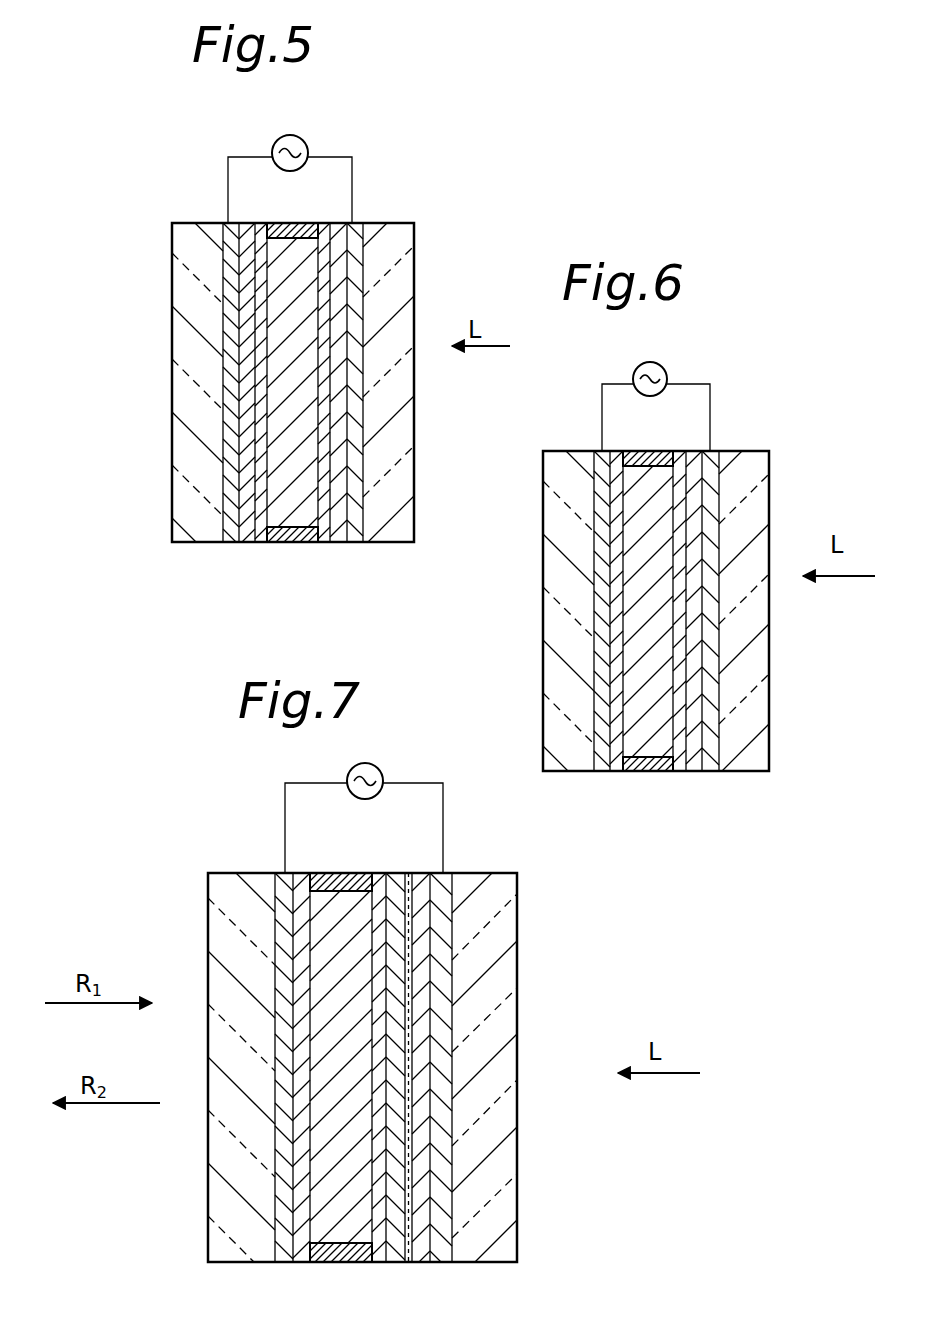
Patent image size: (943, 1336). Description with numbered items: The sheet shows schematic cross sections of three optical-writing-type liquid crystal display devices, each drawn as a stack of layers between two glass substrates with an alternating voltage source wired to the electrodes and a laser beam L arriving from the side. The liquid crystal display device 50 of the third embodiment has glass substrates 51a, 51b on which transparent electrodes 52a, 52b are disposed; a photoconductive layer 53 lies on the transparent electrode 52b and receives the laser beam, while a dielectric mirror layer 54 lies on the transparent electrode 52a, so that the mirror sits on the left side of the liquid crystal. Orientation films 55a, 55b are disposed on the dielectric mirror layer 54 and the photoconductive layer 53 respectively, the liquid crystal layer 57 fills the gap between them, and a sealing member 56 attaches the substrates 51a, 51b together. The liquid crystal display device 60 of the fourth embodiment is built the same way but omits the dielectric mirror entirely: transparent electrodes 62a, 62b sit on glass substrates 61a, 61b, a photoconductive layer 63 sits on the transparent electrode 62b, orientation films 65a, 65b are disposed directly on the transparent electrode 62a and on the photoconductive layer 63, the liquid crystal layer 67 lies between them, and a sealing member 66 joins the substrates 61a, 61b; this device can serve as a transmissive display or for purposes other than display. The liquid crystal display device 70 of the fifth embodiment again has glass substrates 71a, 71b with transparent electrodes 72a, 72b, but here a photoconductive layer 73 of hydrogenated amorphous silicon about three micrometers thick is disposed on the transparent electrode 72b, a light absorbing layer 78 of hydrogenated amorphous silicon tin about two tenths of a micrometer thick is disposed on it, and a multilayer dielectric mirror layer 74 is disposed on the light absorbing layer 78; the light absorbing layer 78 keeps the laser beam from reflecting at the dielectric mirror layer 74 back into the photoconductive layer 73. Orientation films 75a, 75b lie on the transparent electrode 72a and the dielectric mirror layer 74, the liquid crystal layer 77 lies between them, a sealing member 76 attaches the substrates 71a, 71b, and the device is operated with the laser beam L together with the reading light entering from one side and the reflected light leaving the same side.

In FIG. 5, the liquid crystal display device 50 is at (146, 306).
In FIG. 5, the glass substrate 51a is at (185, 242).
In FIG. 5, the glass substrate 51b is at (398, 243).
In FIG. 5, the transparent electrode 52a is at (227, 228).
In FIG. 5, the transparent electrode 52b is at (353, 237).
In FIG. 5, the photoconductive layer 53 is at (342, 530).
In FIG. 5, the dielectric mirror layer 54 is at (247, 530).
In FIG. 5, the orientation film 55a is at (257, 223).
In FIG. 5, the orientation film 55b is at (325, 223).
In FIG. 5, the sealing member 56 is at (282, 223).
In FIG. 5, the liquid crystal layer 57 is at (303, 502).
In FIG. 6, the liquid crystal display device 60 is at (518, 483).
In FIG. 6, the glass substrate 61a is at (555, 463).
In FIG. 6, the glass substrate 61b is at (757, 473).
In FIG. 6, the transparent electrode 62a is at (597, 457).
In FIG. 6, the transparent electrode 62b is at (713, 463).
In FIG. 6, the photoconductive layer 63 is at (690, 767).
In FIG. 6, the orientation film 65a is at (617, 451).
In FIG. 6, the orientation film 65b is at (687, 451).
In FIG. 6, the sealing member 66 is at (650, 451).
In FIG. 6, the liquid crystal layer 67 is at (657, 742).
In FIG. 7, the liquid crystal display device 70 is at (172, 1276).
In FIG. 7, the glass substrate 71a is at (228, 893).
In FIG. 7, the glass substrate 71b is at (508, 887).
In FIG. 7, the transparent electrode 72a is at (278, 877).
In FIG. 7, the transparent electrode 72b is at (443, 883).
In FIG. 7, the photoconductive layer 73 is at (425, 1263).
In FIG. 7, the dielectric mirror layer 74 is at (395, 1250).
In FIG. 7, the orientation film 75a is at (300, 873).
In FIG. 7, the orientation film 75b is at (377, 873).
In FIG. 7, the sealing member 76 is at (337, 873).
In FIG. 7, the liquid crystal layer 77 is at (345, 1205).
In FIG. 7, the light absorbing layer 78 is at (406, 1263).